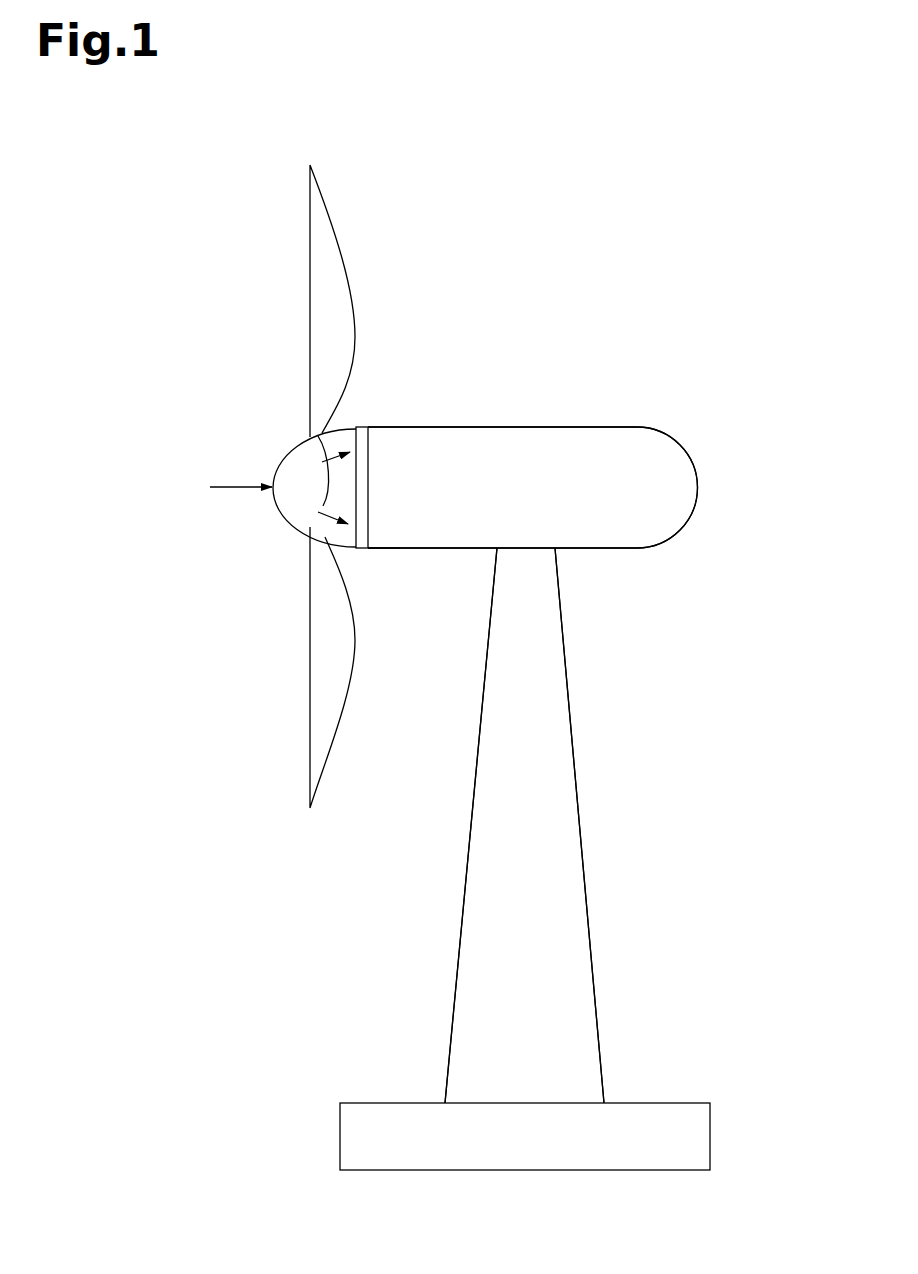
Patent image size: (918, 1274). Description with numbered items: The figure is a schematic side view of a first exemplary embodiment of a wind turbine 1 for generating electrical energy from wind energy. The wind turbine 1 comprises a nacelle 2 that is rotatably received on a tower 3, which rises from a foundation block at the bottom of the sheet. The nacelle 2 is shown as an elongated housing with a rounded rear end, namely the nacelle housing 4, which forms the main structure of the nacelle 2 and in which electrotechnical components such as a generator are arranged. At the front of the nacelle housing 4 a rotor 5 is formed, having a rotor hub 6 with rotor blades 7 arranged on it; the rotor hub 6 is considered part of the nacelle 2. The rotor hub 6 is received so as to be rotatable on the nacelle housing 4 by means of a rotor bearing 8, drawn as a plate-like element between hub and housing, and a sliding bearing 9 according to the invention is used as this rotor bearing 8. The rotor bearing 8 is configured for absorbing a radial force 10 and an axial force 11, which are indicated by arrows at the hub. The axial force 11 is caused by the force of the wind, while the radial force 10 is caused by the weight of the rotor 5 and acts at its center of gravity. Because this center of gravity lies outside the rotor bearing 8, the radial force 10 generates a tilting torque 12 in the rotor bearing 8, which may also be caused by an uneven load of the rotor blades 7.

The wind turbine 1 is at (700, 142).
The nacelle 2 is at (595, 343).
The tower 3 is at (552, 782).
The nacelle housing 4 is at (592, 447).
The rotor 5 is at (272, 447).
The rotor hub 6 is at (315, 528).
The rotor blades 7 is at (333, 315).
The rotor bearing 8 is at (370, 417).
The sliding bearing 9 is at (367, 568).
The radial force 10 is at (322, 476).
The axial force 11 is at (244, 488).
The tilting torque 12 is at (323, 506).